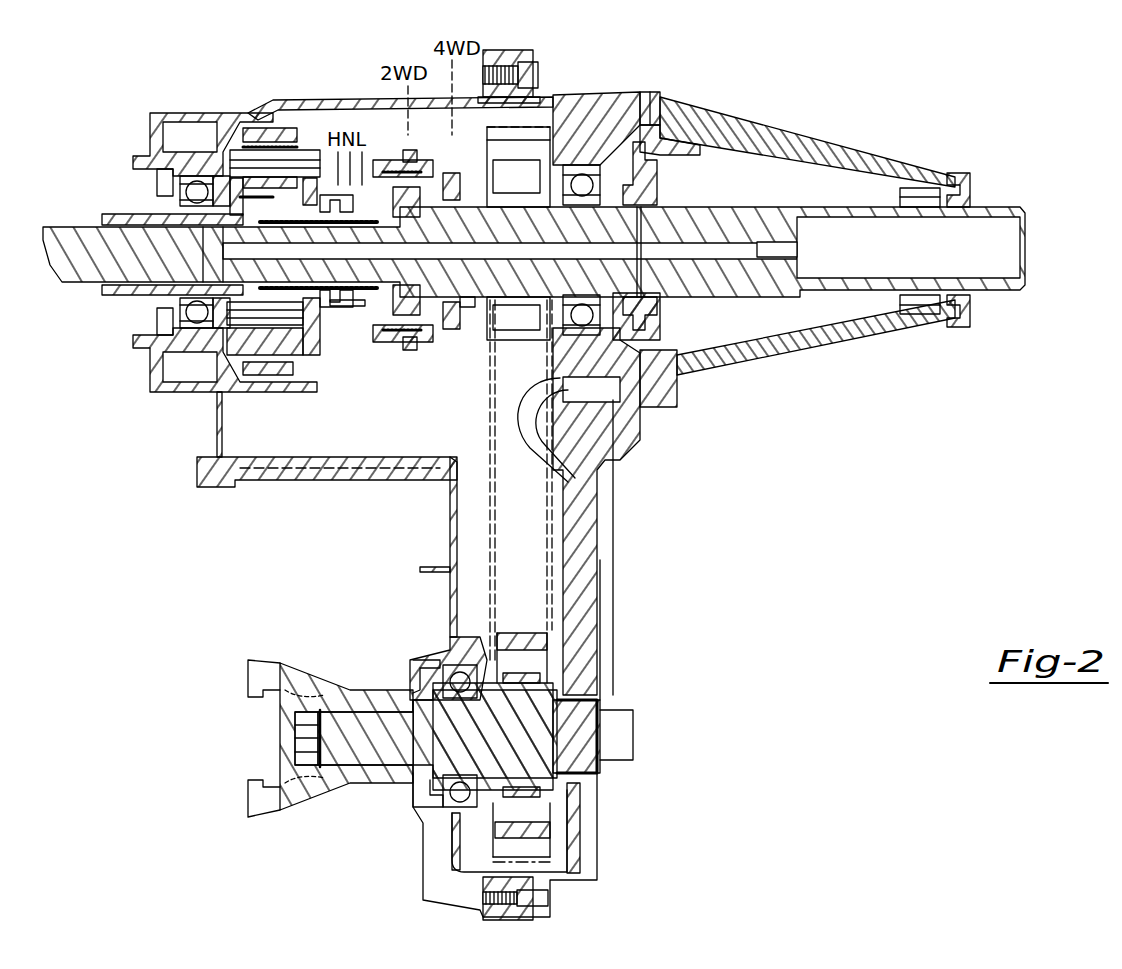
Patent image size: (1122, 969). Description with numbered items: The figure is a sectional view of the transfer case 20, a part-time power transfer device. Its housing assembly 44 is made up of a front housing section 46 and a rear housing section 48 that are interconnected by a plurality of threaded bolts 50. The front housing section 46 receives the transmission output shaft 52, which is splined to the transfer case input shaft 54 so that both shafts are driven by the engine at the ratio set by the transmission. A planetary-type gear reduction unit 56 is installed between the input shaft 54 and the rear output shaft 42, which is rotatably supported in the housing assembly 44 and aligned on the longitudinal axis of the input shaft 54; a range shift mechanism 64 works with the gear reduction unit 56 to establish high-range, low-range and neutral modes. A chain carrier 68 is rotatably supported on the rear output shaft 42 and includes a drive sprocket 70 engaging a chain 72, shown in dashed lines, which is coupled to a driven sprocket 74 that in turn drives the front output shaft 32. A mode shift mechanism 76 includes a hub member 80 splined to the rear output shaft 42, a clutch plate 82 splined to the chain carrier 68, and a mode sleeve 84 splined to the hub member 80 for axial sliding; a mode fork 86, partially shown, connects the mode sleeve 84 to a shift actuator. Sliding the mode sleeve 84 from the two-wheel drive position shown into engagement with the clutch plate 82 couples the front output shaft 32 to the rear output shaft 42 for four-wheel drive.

The transfer case 20 is at (808, 114).
The front output shaft 32 is at (375, 727).
The rear output shaft 42 is at (973, 205).
The housing assembly 44 is at (845, 168).
The front housing section 46 is at (312, 470).
The rear housing section 48 is at (585, 120).
The threaded bolts 50 is at (540, 65).
The transmission output shaft 52 is at (85, 245).
The transfer case input shaft 54 is at (125, 295).
The planetary-type gear reduction unit 56 is at (310, 140).
The range shift mechanism 64 is at (338, 314).
The chain carrier 68 is at (472, 308).
The drive sprocket 70 is at (560, 160).
The chain 72 is at (525, 525).
The driven sprocket 74 is at (530, 632).
The mode shift mechanism 76 is at (383, 358).
The hub member 80 is at (395, 193).
The clutch plate 82 is at (463, 188).
The mode sleeve 84 is at (420, 328).
The mode fork 86 is at (408, 350).